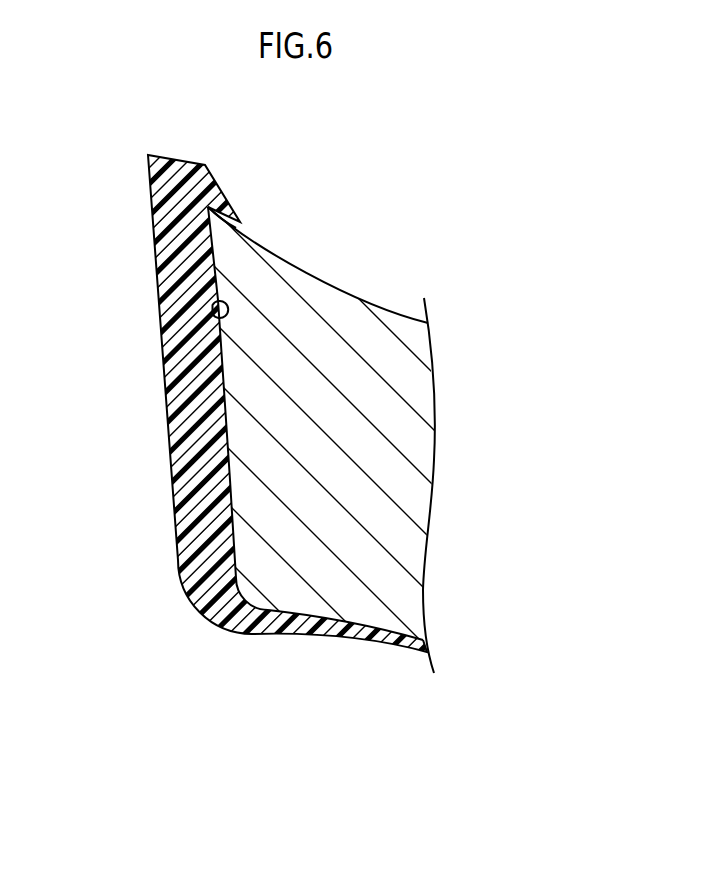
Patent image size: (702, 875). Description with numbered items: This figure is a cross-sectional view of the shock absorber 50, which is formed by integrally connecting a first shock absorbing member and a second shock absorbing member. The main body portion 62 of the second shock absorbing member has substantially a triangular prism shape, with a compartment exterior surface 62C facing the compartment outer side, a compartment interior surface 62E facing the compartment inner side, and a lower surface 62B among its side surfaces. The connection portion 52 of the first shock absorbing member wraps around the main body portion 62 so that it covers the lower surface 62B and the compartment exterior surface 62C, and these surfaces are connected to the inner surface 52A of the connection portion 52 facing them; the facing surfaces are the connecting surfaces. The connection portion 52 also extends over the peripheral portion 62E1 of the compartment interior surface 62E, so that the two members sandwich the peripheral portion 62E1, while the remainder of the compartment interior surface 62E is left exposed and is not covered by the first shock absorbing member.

The shock absorber 50 is at (351, 437).
The connection portion 52 is at (190, 501).
The inner surface 52A is at (212, 304).
The main body portion 62 is at (398, 433).
The lower surface 62B is at (210, 386).
The compartment exterior surface 62C is at (372, 628).
The compartment interior surface 62E is at (367, 303).
The peripheral portion 62E1 is at (237, 218).